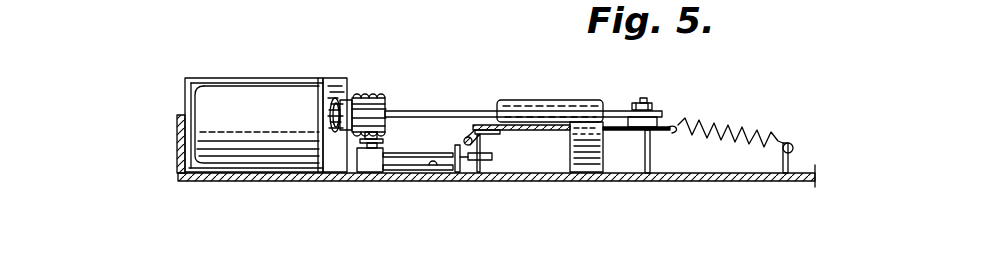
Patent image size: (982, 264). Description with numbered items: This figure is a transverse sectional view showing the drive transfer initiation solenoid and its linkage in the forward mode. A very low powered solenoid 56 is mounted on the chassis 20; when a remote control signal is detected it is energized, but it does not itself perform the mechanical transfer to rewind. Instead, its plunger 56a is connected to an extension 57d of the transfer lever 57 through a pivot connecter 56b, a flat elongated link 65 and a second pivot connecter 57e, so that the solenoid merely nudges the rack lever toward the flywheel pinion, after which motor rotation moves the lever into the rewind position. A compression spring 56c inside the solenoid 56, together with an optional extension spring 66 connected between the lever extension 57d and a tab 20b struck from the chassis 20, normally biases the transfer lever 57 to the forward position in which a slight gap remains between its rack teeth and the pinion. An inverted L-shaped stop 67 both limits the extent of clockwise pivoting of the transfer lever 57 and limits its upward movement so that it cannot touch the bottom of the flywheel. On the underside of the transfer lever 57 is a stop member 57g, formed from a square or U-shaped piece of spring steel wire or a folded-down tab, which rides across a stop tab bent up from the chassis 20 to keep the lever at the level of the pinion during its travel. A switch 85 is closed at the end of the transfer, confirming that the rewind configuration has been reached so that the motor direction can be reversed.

The chassis 20 is at (250, 182).
The tab 20b is at (778, 165).
The solenoid 56 is at (248, 97).
The plunger 56a is at (386, 108).
The pivot connecter 56b is at (383, 95).
The compression spring 56c is at (360, 97).
The flat elongated link 65 is at (415, 108).
The extension spring 66 is at (738, 133).
The inverted L-shaped stop 67 is at (555, 100).
The transfer lever 57 is at (537, 132).
The extension 57d is at (632, 132).
The pivot connecter 57e is at (643, 99).
The stop member 57g is at (467, 137).
The switch 85 is at (404, 176).